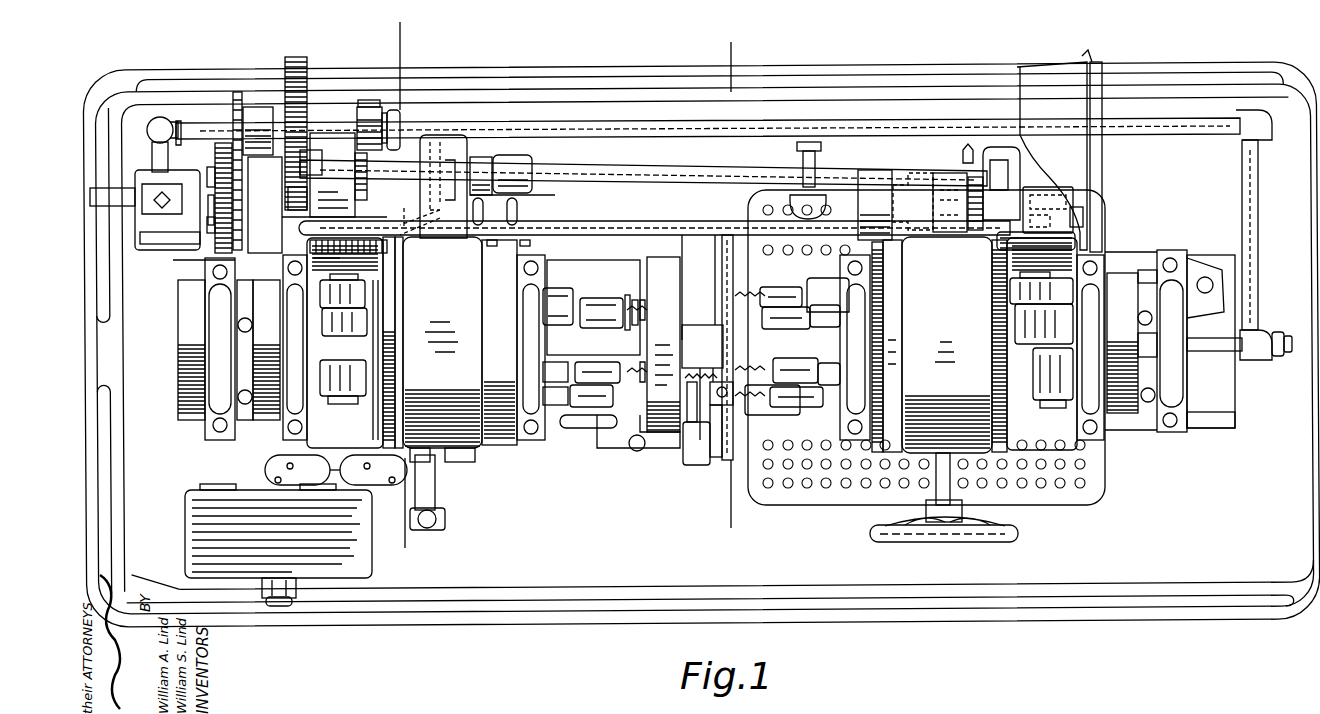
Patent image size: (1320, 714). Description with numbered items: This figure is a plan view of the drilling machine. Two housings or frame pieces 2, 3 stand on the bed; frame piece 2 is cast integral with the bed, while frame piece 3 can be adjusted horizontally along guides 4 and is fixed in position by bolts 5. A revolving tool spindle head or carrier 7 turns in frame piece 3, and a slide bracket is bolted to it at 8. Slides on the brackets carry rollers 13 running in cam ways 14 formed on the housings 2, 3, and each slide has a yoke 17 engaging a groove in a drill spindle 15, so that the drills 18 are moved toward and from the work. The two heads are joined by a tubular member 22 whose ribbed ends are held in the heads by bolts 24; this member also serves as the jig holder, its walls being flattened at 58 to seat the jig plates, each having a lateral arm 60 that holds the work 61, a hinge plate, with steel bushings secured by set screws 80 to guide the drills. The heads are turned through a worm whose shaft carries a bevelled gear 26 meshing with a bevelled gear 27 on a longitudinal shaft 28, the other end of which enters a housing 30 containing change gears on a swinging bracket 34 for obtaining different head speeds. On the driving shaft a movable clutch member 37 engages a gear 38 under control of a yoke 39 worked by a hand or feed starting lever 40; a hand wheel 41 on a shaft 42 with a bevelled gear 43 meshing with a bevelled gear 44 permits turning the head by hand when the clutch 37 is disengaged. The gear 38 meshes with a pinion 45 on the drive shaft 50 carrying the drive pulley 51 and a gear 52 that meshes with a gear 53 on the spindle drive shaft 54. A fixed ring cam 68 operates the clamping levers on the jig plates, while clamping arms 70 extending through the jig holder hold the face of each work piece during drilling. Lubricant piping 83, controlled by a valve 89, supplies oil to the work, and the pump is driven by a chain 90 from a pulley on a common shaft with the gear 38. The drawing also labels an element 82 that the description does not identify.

The housing or frame piece 2 is at (502, 450).
The housing or frame piece 3 is at (950, 466).
The horizontal guides 4 is at (1228, 256).
The bolts 5 is at (1212, 287).
The revolving tool spindle head 7 is at (730, 286).
The bolts 8 is at (414, 286).
The roller 13 is at (230, 396).
The cam way 14 is at (230, 310).
The drill spindles 15 is at (592, 404).
The projection or yoke 17 is at (354, 398).
The drills 18 is at (618, 418).
The tubular connection 22 is at (608, 354).
The bolts 24 is at (558, 332).
The bevelled gear 26 is at (414, 226).
The bevelled gear 27 is at (466, 147).
The shaft 28 is at (578, 166).
The housing 30 is at (1046, 84).
The swinging bracket 34 is at (1022, 180).
The movable clutch member 37 is at (374, 108).
The gear 38 is at (290, 58).
The yoke 39 is at (366, 100).
The hand or feed starting lever 40 is at (430, 530).
The hand wheel 41 is at (1000, 534).
The shaft 42 is at (936, 496).
The bevelled gear 43 is at (918, 168).
The bevelled gear 44 is at (963, 150).
The pinion 45 is at (262, 180).
The drive shaft 50 is at (375, 190).
The drive pulley 51 is at (306, 211).
The gear 52 is at (222, 166).
The gear 53 is at (218, 215).
The spindle drive shaft 54 is at (540, 228).
The flattened wall portions 58 is at (694, 307).
The arm 60 is at (718, 456).
The work 61 is at (690, 462).
The fixed controlling member 68 is at (654, 274).
The clamping device 70 is at (692, 418).
The set screws 80 is at (725, 398).
The pipe elbow 82 is at (138, 154).
The piping 83 is at (180, 123).
The valve 89 is at (1268, 356).
The chain 90 is at (238, 100).